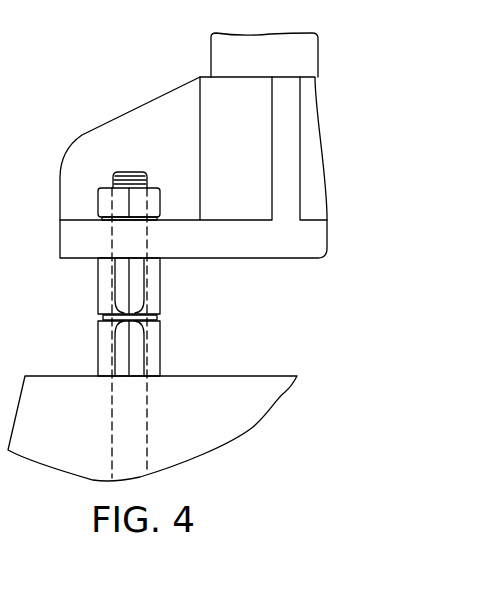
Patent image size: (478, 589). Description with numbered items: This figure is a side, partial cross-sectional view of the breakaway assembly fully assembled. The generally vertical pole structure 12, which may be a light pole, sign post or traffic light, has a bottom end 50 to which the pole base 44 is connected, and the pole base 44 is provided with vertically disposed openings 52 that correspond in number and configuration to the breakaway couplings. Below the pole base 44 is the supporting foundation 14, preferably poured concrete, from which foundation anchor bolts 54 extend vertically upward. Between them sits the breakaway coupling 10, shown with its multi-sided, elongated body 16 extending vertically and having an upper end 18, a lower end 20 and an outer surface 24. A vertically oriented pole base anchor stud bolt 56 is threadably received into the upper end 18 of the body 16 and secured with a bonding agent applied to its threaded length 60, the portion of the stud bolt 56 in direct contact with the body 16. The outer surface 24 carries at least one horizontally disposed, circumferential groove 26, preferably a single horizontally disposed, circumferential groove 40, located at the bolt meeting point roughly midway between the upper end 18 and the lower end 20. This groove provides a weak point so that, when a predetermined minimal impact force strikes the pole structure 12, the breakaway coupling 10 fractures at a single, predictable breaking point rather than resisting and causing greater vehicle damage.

The breakaway coupling 10 is at (197, 298).
The generally vertical pole structure 12 is at (215, 129).
The supporting foundation 14 is at (168, 428).
The multi-sided, elongated body 16 is at (124, 286).
The upper end 18 is at (94, 261).
The lower end 20 is at (132, 348).
The outer surface 24 is at (163, 352).
The horizontally disposed, circumferential groove 26 is at (86, 319).
The single horizontally disposed, circumferential groove 40 is at (167, 321).
The pole base 44 is at (125, 108).
The bottom end 50 is at (208, 43).
The vertically disposed openings 52 is at (108, 237).
The foundation anchor bolts 54 is at (109, 425).
The vertically oriented pole base anchor stud bolt 56 is at (110, 178).
The threaded length 60 is at (152, 274).